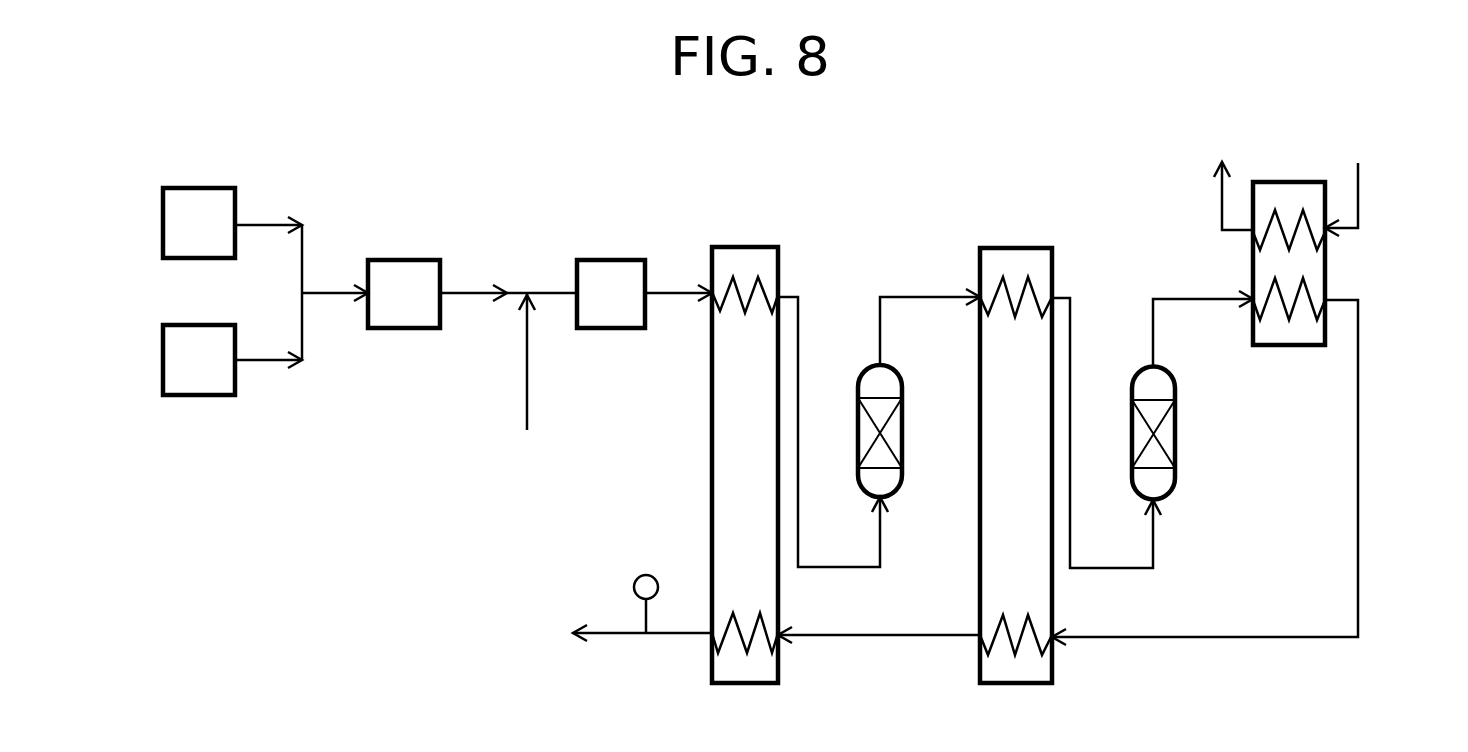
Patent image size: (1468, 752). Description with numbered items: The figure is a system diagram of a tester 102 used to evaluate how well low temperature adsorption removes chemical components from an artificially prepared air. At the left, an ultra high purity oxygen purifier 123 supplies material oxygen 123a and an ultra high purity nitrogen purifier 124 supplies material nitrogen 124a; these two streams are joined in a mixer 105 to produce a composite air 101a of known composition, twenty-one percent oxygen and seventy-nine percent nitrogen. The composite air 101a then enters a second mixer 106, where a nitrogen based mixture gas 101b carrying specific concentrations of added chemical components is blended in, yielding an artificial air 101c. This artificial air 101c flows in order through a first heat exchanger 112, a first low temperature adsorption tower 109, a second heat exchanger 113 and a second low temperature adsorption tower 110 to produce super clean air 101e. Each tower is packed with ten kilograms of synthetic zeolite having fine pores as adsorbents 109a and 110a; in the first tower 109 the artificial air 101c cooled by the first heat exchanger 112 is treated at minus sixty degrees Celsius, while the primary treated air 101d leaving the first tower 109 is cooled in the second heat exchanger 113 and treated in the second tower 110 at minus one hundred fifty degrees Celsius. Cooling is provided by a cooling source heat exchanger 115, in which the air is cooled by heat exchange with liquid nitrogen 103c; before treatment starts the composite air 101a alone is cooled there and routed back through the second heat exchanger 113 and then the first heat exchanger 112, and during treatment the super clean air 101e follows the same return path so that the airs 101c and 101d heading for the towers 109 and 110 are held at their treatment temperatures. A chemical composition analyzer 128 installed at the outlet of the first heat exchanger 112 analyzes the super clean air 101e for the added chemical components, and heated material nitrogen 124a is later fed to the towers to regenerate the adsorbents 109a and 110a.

The tester 102 is at (1142, 133).
The ultra high purity oxygen purifier 123 is at (197, 188).
The ultra high purity nitrogen purifier 124 is at (185, 395).
The material oxygen 123a is at (320, 198).
The material nitrogen 124a is at (293, 368).
The mixer 105 is at (398, 260).
The mixer 106 is at (603, 260).
The composite air 101a is at (500, 285).
The N2 based mixture gas 101b is at (537, 323).
The artificial air 101c is at (702, 283).
The primary treated air 101d is at (968, 290).
The super clean air 101e is at (1237, 287).
The first heat exchanger 112 is at (712, 500).
The second heat exchanger 113 is at (980, 453).
The cooling source heat exchanger 115 is at (1290, 345).
The first low temperature adsorption tower 109 is at (928, 372).
The adsorbent 109a is at (867, 428).
The second low temperature adsorption tower 110 is at (1172, 373).
The adsorbent 110a is at (1167, 440).
The liquid nitrogen 103c is at (1335, 240).
The chemical composition analyzer 128 is at (638, 577).